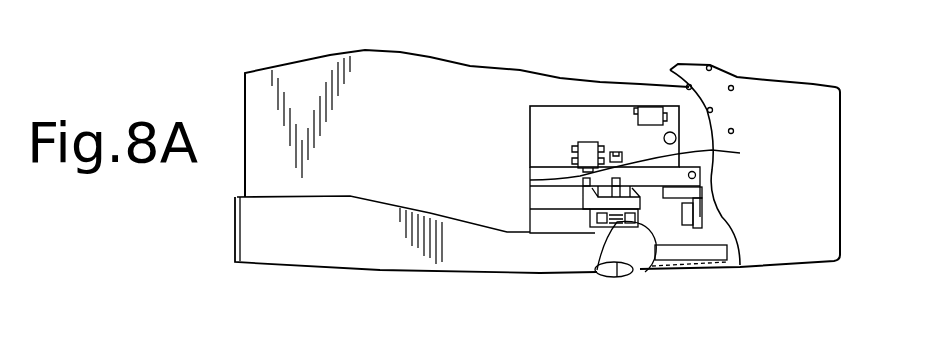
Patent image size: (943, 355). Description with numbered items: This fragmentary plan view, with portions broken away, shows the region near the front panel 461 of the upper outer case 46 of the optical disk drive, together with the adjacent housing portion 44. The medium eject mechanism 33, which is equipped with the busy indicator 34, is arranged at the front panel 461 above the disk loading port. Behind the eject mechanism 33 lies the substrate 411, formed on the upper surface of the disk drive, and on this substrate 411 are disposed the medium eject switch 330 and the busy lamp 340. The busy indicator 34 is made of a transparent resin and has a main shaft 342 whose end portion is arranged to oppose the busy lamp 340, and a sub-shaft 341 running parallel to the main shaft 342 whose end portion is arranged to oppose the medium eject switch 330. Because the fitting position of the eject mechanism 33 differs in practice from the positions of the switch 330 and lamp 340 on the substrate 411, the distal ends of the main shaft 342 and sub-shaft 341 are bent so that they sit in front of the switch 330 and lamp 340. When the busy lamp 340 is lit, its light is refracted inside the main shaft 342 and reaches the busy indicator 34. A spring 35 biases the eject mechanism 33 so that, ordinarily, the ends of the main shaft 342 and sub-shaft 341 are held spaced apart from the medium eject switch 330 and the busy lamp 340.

The upper housing body 44 is at (393, 82).
The substrate 411 is at (548, 125).
The medium eject switch 330 is at (592, 142).
The busy lamp 340 is at (620, 152).
The upper outer case 46 is at (792, 117).
The sub-shaft 341 is at (530, 180).
The main shaft 342 is at (664, 160).
The front panel 461 is at (380, 272).
The medium eject mechanism 33 is at (602, 274).
The busy indicator 34 is at (618, 278).
The spring 35 is at (652, 274).